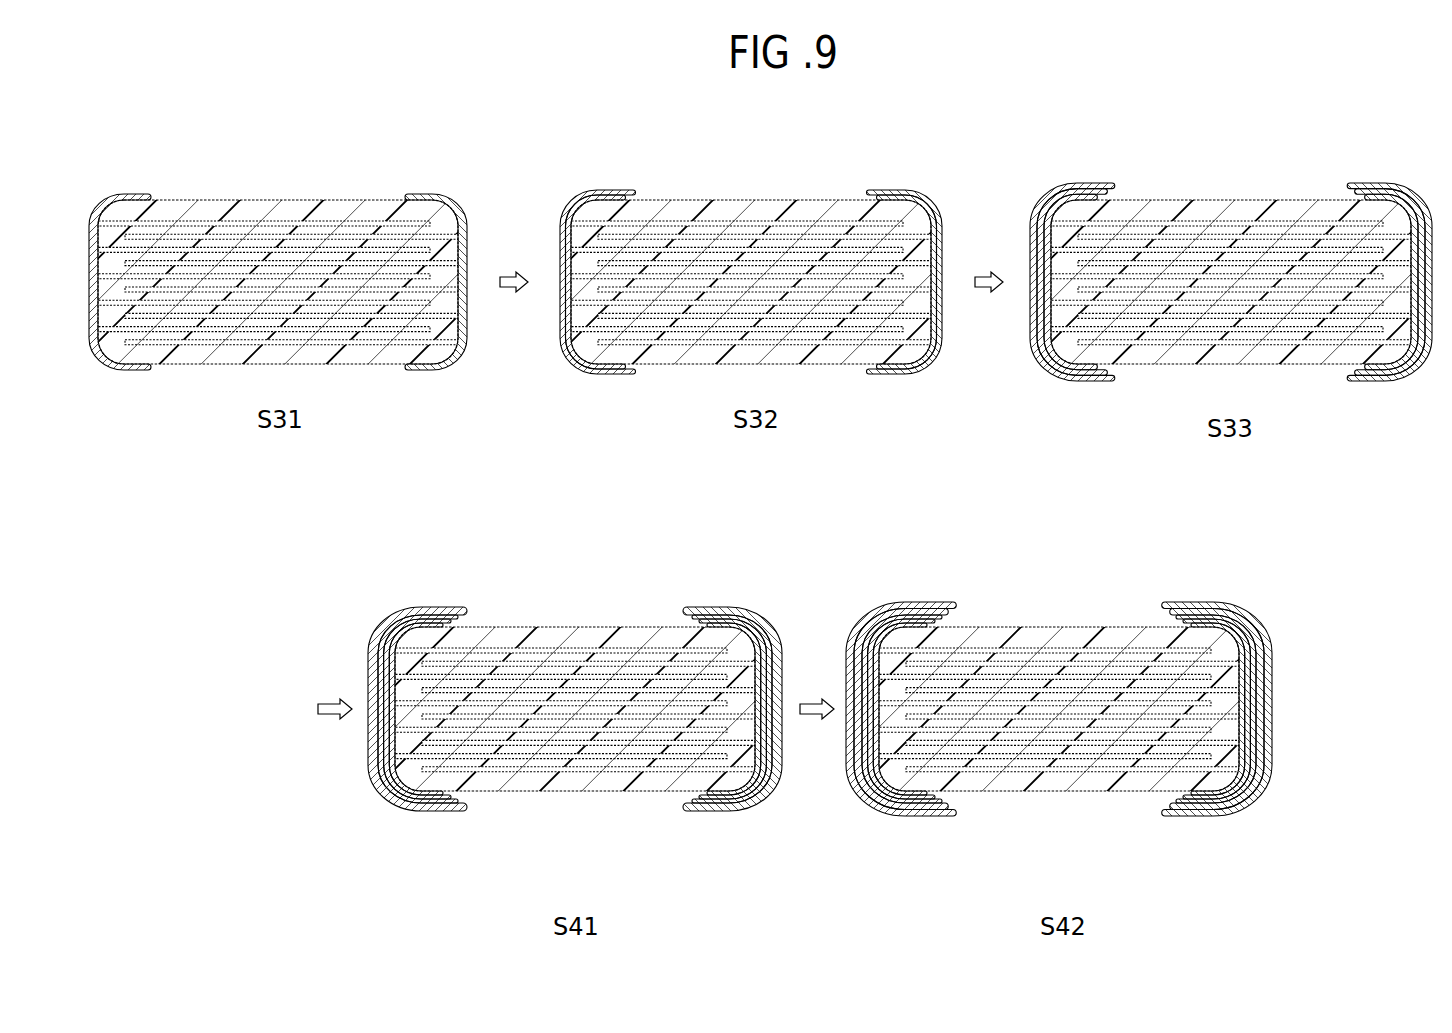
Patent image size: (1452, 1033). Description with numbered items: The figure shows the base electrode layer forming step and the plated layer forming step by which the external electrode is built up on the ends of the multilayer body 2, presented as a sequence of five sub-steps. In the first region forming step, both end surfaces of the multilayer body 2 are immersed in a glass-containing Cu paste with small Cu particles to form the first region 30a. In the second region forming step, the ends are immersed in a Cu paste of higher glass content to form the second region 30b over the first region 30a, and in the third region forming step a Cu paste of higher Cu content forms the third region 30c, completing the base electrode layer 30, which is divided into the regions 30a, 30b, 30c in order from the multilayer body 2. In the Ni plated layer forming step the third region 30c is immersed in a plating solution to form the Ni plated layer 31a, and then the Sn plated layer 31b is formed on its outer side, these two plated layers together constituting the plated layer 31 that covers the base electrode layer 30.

The multilayer body 2 is at (726, 477).
The base electrode layer 30 is at (750, 562).
The first region 30a is at (745, 561).
The second region 30b is at (893, 561).
The third region 30c is at (893, 561).
The plated layer 31 is at (873, 751).
The Ni plated layer 31a is at (817, 775).
The Sn plated layer 31b is at (1044, 775).